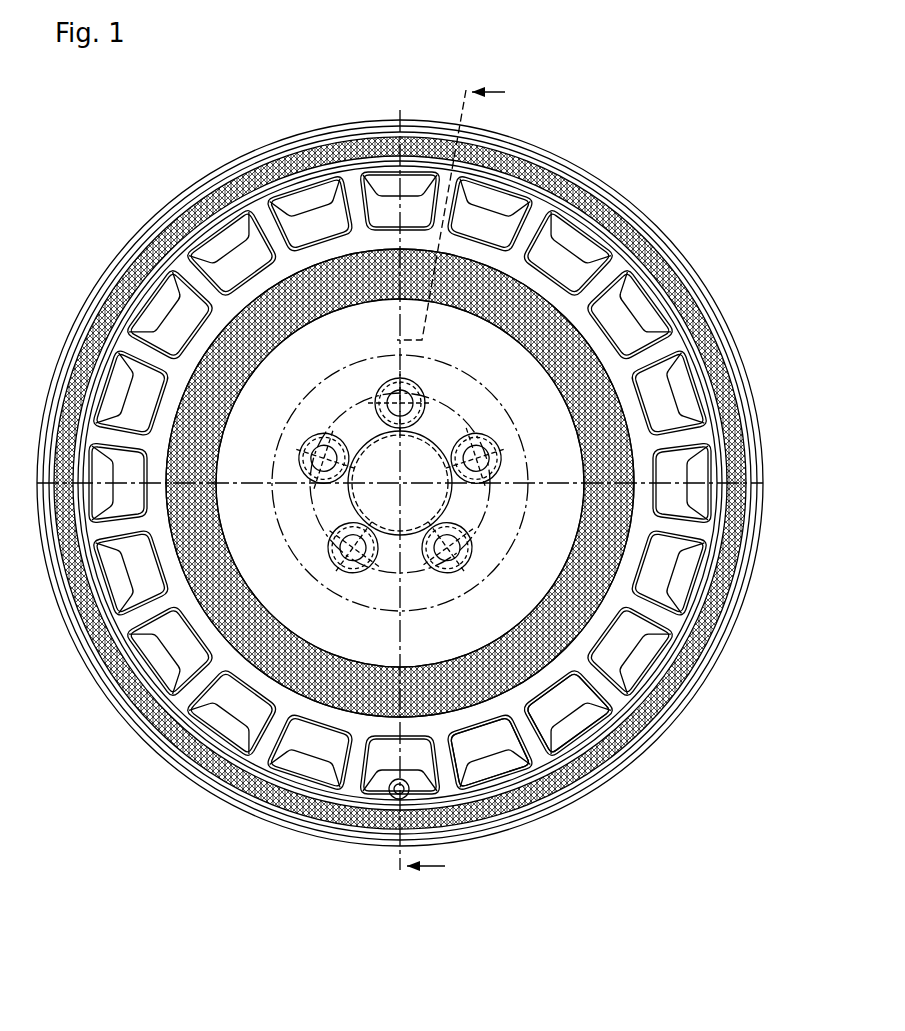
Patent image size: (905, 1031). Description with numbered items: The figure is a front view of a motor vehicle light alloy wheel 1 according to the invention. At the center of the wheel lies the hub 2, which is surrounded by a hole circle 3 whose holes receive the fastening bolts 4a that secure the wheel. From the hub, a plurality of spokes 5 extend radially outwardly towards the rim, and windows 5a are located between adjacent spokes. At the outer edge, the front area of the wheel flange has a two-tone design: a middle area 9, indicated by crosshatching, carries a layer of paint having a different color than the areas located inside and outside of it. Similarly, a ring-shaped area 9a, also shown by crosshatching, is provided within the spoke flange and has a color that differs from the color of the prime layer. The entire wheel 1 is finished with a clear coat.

The light alloy wheel 1 is at (280, 147).
The hub 2 is at (414, 459).
The hole circle 3 is at (468, 426).
The fastening bolts 4a is at (346, 551).
The spokes 5 is at (566, 708).
The windows 5a is at (489, 742).
The middle area 9 is at (594, 614).
The ring-shaped area 9a is at (474, 280).